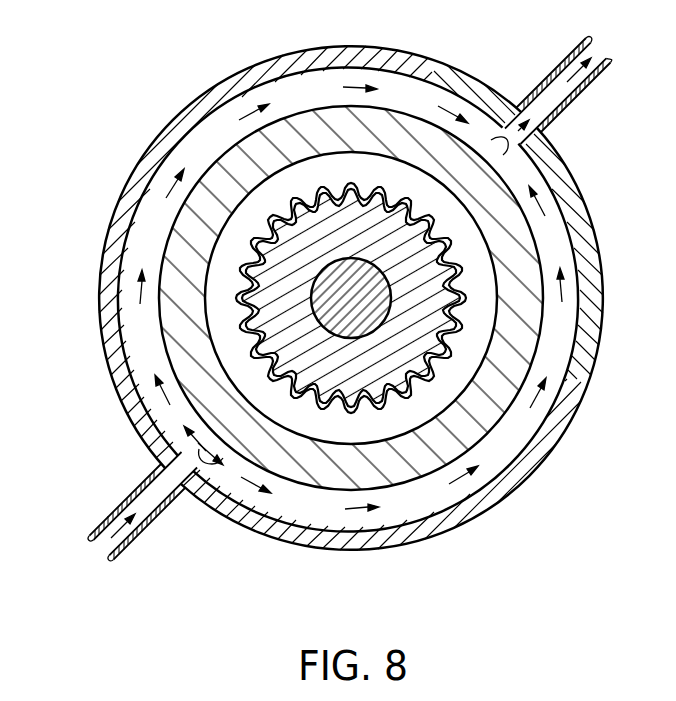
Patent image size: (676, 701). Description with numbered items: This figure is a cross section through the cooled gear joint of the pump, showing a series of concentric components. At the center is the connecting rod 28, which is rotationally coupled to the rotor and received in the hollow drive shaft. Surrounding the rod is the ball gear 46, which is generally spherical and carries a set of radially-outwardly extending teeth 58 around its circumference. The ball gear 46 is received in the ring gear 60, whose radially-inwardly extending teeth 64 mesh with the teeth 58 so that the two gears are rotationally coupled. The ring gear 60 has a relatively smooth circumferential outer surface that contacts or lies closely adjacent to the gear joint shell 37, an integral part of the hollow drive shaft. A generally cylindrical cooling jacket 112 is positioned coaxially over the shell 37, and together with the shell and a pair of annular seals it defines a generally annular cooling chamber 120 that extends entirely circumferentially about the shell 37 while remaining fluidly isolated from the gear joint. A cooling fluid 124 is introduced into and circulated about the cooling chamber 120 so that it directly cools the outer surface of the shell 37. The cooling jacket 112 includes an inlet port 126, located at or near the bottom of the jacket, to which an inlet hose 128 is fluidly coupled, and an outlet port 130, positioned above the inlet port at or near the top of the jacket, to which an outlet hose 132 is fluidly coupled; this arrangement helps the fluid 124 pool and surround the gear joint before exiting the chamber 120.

The connecting rod 28 is at (383, 274).
The gear joint shell 37 is at (525, 325).
The ball gear 46 is at (348, 212).
The teeth 58 is at (323, 203).
The ring gear 60 is at (480, 278).
The teeth 64 is at (282, 220).
The cooling jacket 112 is at (550, 435).
The cooling chamber 120 is at (427, 500).
The cooling fluid 124 is at (307, 510).
The inlet port 126 is at (162, 466).
The inlet hose 128 is at (98, 523).
The outlet port 130 is at (541, 131).
The outlet hose 132 is at (602, 70).